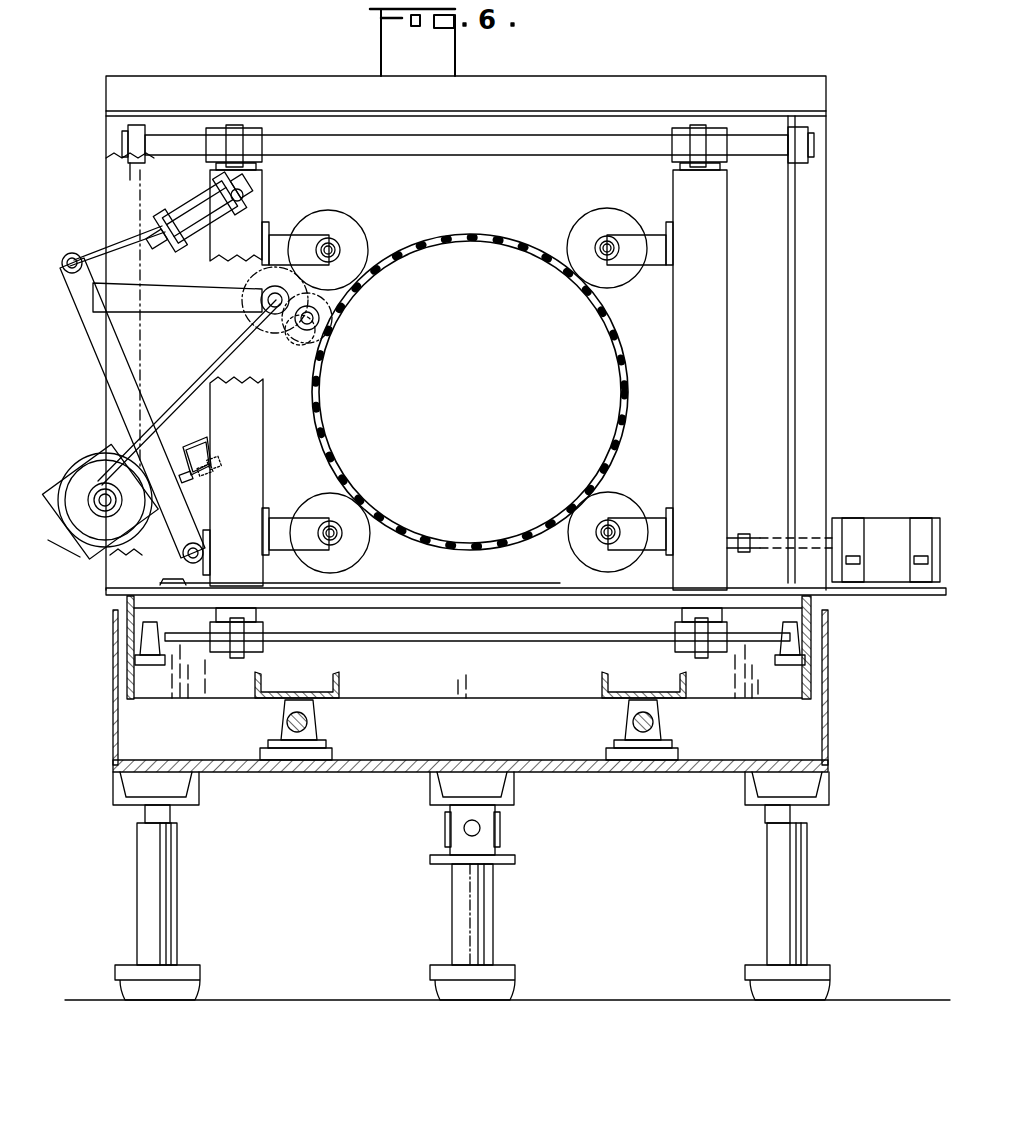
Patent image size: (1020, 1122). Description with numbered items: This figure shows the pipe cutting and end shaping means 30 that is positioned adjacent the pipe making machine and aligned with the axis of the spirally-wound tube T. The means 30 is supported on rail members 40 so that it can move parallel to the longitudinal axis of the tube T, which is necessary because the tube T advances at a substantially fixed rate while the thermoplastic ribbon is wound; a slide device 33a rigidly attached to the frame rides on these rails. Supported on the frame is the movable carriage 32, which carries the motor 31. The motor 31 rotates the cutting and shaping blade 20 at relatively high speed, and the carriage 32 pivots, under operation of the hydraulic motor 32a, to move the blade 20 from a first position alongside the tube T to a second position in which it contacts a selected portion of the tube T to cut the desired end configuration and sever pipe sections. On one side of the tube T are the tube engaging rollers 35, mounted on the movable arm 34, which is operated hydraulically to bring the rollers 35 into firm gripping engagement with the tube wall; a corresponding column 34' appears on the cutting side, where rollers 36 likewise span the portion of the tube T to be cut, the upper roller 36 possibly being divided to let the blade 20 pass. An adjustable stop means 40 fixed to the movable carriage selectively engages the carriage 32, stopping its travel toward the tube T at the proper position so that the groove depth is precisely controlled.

The pipe cutting and end shaping means 30 is at (140, 76).
The tube T is at (520, 238).
The left support column 34' is at (267, 359).
The movable arm 34 is at (723, 376).
The rollers 36 is at (362, 238).
The tube engaging rollers 35 is at (620, 218).
The cutting and shaping blade 20 is at (272, 345).
The movable carriage 32 is at (97, 346).
The hydraulic motor 32a is at (158, 200).
The motor 31 is at (84, 460).
The adjustable stop means 40 is at (208, 470).
The slide device 33a is at (322, 718).